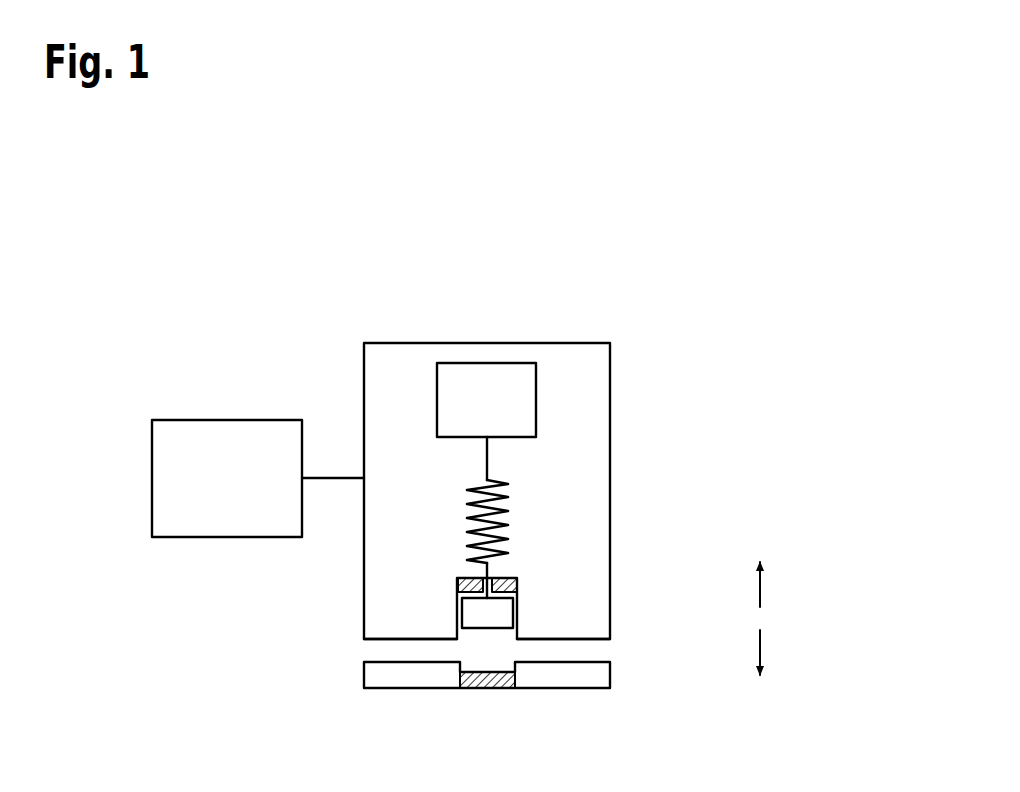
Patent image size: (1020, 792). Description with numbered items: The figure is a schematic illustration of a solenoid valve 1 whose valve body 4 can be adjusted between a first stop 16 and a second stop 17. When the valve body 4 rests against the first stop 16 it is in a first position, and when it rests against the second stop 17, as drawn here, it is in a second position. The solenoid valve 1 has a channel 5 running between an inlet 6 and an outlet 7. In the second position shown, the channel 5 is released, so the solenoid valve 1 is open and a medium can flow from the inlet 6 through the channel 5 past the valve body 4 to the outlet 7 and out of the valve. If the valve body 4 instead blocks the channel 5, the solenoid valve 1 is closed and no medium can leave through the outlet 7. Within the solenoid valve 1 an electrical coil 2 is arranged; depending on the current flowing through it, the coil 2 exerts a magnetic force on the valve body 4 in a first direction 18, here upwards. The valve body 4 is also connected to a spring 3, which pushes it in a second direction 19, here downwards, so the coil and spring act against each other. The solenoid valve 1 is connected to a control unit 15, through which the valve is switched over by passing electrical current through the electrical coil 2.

The solenoid valve 1 is at (802, 232).
The electrical coil 2 is at (536, 402).
The spring 3 is at (508, 517).
The valve body 4 is at (513, 608).
The channel 5 is at (532, 650).
The inlet 6 is at (400, 652).
The outlet 7 is at (575, 650).
The control unit 15 is at (225, 420).
The first stop 16 is at (483, 688).
The second stop 17 is at (457, 578).
The opening direction 18 is at (760, 587).
The second direction 19 is at (760, 647).